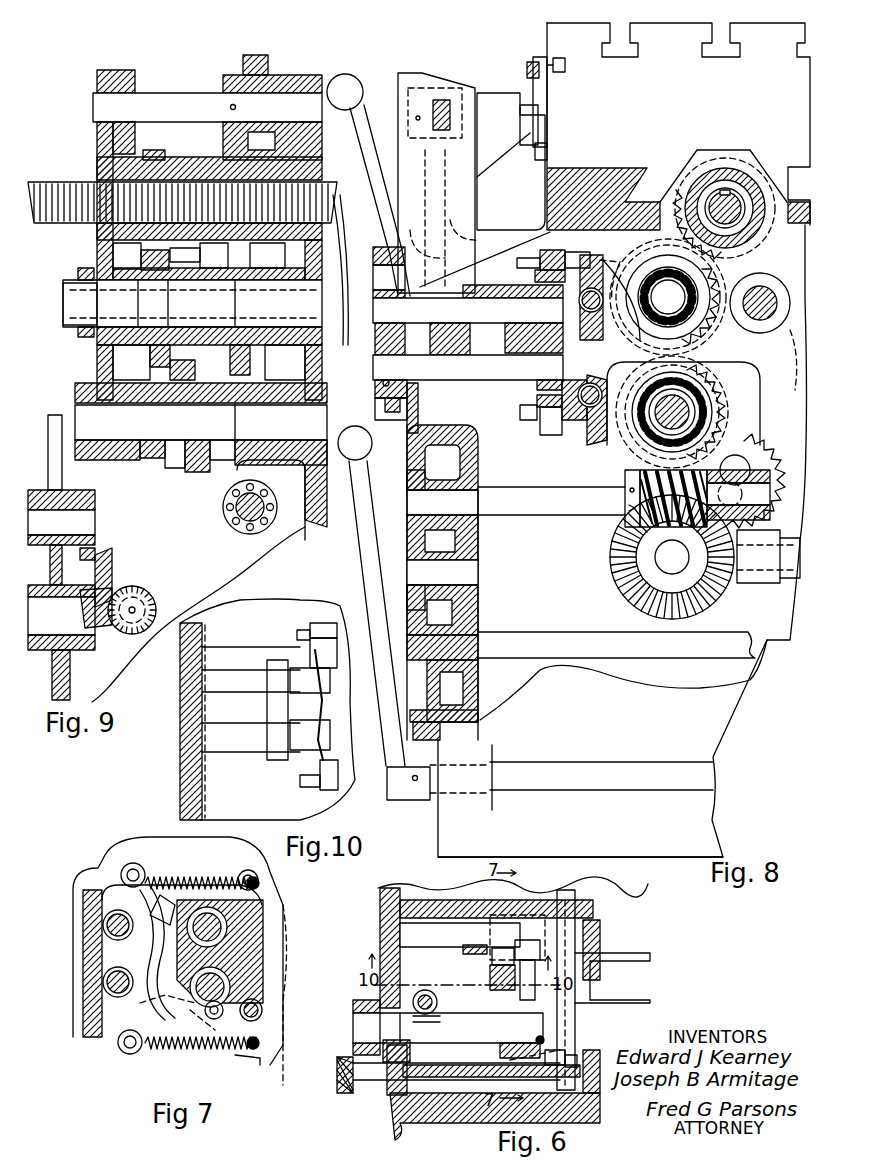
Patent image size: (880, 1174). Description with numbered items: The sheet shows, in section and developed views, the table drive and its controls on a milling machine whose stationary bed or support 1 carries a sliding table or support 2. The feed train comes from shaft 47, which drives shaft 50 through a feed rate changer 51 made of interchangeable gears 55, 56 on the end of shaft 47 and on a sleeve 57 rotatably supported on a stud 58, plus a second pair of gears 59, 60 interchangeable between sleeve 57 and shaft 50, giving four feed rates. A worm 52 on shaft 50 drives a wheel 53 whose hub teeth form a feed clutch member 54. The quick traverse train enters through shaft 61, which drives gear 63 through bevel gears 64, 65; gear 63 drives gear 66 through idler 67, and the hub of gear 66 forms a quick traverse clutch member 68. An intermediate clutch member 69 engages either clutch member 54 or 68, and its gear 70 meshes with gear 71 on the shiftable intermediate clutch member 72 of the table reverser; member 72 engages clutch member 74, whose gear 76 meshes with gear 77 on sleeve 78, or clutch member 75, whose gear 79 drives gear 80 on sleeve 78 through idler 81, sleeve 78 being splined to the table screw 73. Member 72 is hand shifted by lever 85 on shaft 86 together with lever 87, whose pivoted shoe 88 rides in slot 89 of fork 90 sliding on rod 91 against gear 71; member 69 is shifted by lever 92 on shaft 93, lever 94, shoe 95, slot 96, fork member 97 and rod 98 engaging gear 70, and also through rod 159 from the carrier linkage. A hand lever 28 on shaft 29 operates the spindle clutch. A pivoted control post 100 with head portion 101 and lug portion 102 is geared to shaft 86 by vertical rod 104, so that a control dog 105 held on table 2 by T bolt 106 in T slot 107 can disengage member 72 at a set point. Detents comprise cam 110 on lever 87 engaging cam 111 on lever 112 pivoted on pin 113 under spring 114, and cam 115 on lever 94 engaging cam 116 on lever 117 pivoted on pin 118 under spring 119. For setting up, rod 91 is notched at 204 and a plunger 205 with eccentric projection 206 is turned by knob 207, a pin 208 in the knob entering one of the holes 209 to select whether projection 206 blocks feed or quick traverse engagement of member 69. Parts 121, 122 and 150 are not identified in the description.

In FIG. 9, the bed 1 is at (316, 524).
In FIG. 8, the bed 1 is at (437, 828).
In FIG. 6, the bed 1 is at (500, 1116).
In FIG. 8, the table 2 is at (546, 32).
In FIG. 8, the hand lever 28 is at (367, 548).
In FIG. 8, the shaft 29 is at (549, 767).
In FIG. 8, the shaft 47 is at (522, 645).
In FIG. 9, the shaft 50 is at (241, 522).
In FIG. 8, the shaft 50 is at (503, 516).
In FIG. 8, the feed rate changer 51 is at (394, 571).
In FIG. 9, the worm 52 is at (271, 521).
In FIG. 8, the worm 52 is at (640, 479).
In FIG. 9, the wheel 53 is at (258, 478).
In FIG. 8, the wheel 53 is at (730, 410).
In FIG. 9, the feed clutch member 54 is at (225, 470).
In FIG. 8, the gear 55 is at (434, 681).
In FIG. 8, the gear 56 is at (442, 537).
In FIG. 8, the sleeve 57 is at (442, 573).
In FIG. 8, the stud 58 is at (478, 581).
In FIG. 8, the gear 59 is at (412, 605).
In FIG. 8, the gear 60 is at (430, 472).
In FIG. 9, the shaft 61 is at (135, 632).
In FIG. 8, the shaft 61 is at (797, 572).
In FIG. 9, the gear 63 is at (72, 662).
In FIG. 8, the gear 63 is at (630, 597).
In FIG. 9, the bevel gear 64 is at (150, 606).
In FIG. 8, the bevel gear 64 is at (732, 592).
In FIG. 9, the bevel gear 65 is at (107, 580).
In FIG. 8, the bevel gear 65 is at (622, 582).
In FIG. 9, the gear 66 is at (82, 383).
In FIG. 9, the idler 67 is at (96, 556).
In FIG. 8, the idler 67 is at (752, 445).
In FIG. 9, the quick traverse clutch member 68 is at (168, 460).
In FIG. 9, the intermediate clutch member 69 is at (178, 470).
In FIG. 9, the gear 70 is at (195, 474).
In FIG. 8, the gear 70 is at (690, 362).
In FIG. 9, the gear 71 is at (206, 254).
In FIG. 8, the gear 71 is at (732, 339).
In FIG. 9, the intermediate clutch member 72 is at (173, 362).
In FIG. 9, the table screw 73 is at (58, 186).
In FIG. 8, the table screw 73 is at (693, 186).
In FIG. 9, the clutch member 74 is at (131, 362).
In FIG. 9, the clutch member 75 is at (252, 331).
In FIG. 9, the gear 76 is at (141, 256).
In FIG. 9, the gear 77 is at (160, 162).
In FIG. 8, the gear 77 is at (760, 252).
In FIG. 9, the sleeve 78 is at (175, 175).
In FIG. 8, the sleeve 78 is at (748, 181).
In FIG. 9, the gear 79 is at (267, 362).
In FIG. 9, the gear 80 is at (275, 254).
In FIG. 9, the idler 81 is at (252, 57).
In FIG. 8, the idler 81 is at (770, 356).
In FIG. 8, the lever 85 is at (370, 154).
In FIG. 6, the lever 85 is at (364, 1002).
In FIG. 8, the shaft 86 is at (490, 298).
In FIG. 7, the shaft 86 is at (222, 900).
In FIG. 6, the shaft 86 is at (474, 1020).
In FIG. 8, the lever 87 is at (585, 326).
In FIG. 7, the lever 87 is at (173, 918).
In FIG. 6, the lever 87 is at (552, 1065).
In FIG. 8, the pivoted shoe 88 is at (551, 249).
In FIG. 8, the slot 89 is at (574, 250).
In FIG. 8, the fork 90 is at (584, 256).
In FIG. 6, the fork 90 is at (612, 955).
In FIG. 8, the rod 91 is at (604, 284).
In FIG. 6, the rod 91 is at (576, 894).
In FIG. 8, the lever 92 is at (344, 348).
In FIG. 8, the shaft 93 is at (485, 381).
In FIG. 7, the shaft 93 is at (228, 1038).
In FIG. 8, the lever 94 is at (562, 380).
In FIG. 7, the lever 94 is at (212, 1027).
In FIG. 8, the pivoted shoe 95 is at (532, 400).
In FIG. 8, the slot 96 is at (598, 398).
In FIG. 8, the fork member 97 is at (594, 428).
In FIG. 8, the rod 98 is at (578, 422).
In FIG. 8, the control post 100 is at (497, 98).
In FIG. 8, the head portion 101 is at (529, 132).
In FIG. 8, the lug portion 102 is at (541, 162).
In FIG. 8, the vertical rod 104 is at (455, 224).
In FIG. 6, the vertical rod 104 is at (432, 998).
In FIG. 8, the control dog 105 is at (536, 62).
In FIG. 8, the T bolt 106 is at (528, 70).
In FIG. 8, the T slot 107 is at (567, 72).
In FIG. 7, the cam 110 is at (172, 880).
In FIG. 10, the cam 111 is at (332, 656).
In FIG. 7, the cam 111 is at (126, 936).
In FIG. 10, the lever 112 is at (322, 625).
In FIG. 7, the lever 112 is at (121, 880).
In FIG. 10, the pin 113 is at (223, 753).
In FIG. 7, the pin 113 is at (104, 986).
In FIG. 7, the spring 114 is at (187, 885).
In FIG. 7, the cam 115 is at (176, 1028).
In FIG. 6, the cam 115 is at (526, 940).
In FIG. 10, the cam 116 is at (338, 772).
In FIG. 7, the cam 116 is at (160, 1008).
In FIG. 10, the lever 117 is at (326, 795).
In FIG. 7, the lever 117 is at (122, 1052).
In FIG. 10, the pin 118 is at (218, 676).
In FIG. 7, the pin 118 is at (104, 930).
In FIG. 6, the pin 118 is at (456, 924).
In FIG. 7, the spring 119 is at (242, 1063).
In FIG. 9, the key 121 is at (86, 267).
In FIG. 9, the shaft end 122 is at (64, 292).
In FIG. 8, the shaft end 122 is at (757, 291).
In FIG. 8, the lever hub 150 is at (395, 250).
In FIG. 8, the rod 159 is at (400, 421).
In FIG. 6, the notch 204 is at (572, 1056).
In FIG. 7, the plunger 205 is at (283, 1080).
In FIG. 6, the plunger 205 is at (546, 1072).
In FIG. 6, the projection 206 is at (582, 1081).
In FIG. 6, the knob 207 is at (340, 1086).
In FIG. 6, the pin 208 is at (350, 1090).
In FIG. 6, the hole 209 is at (390, 1083).